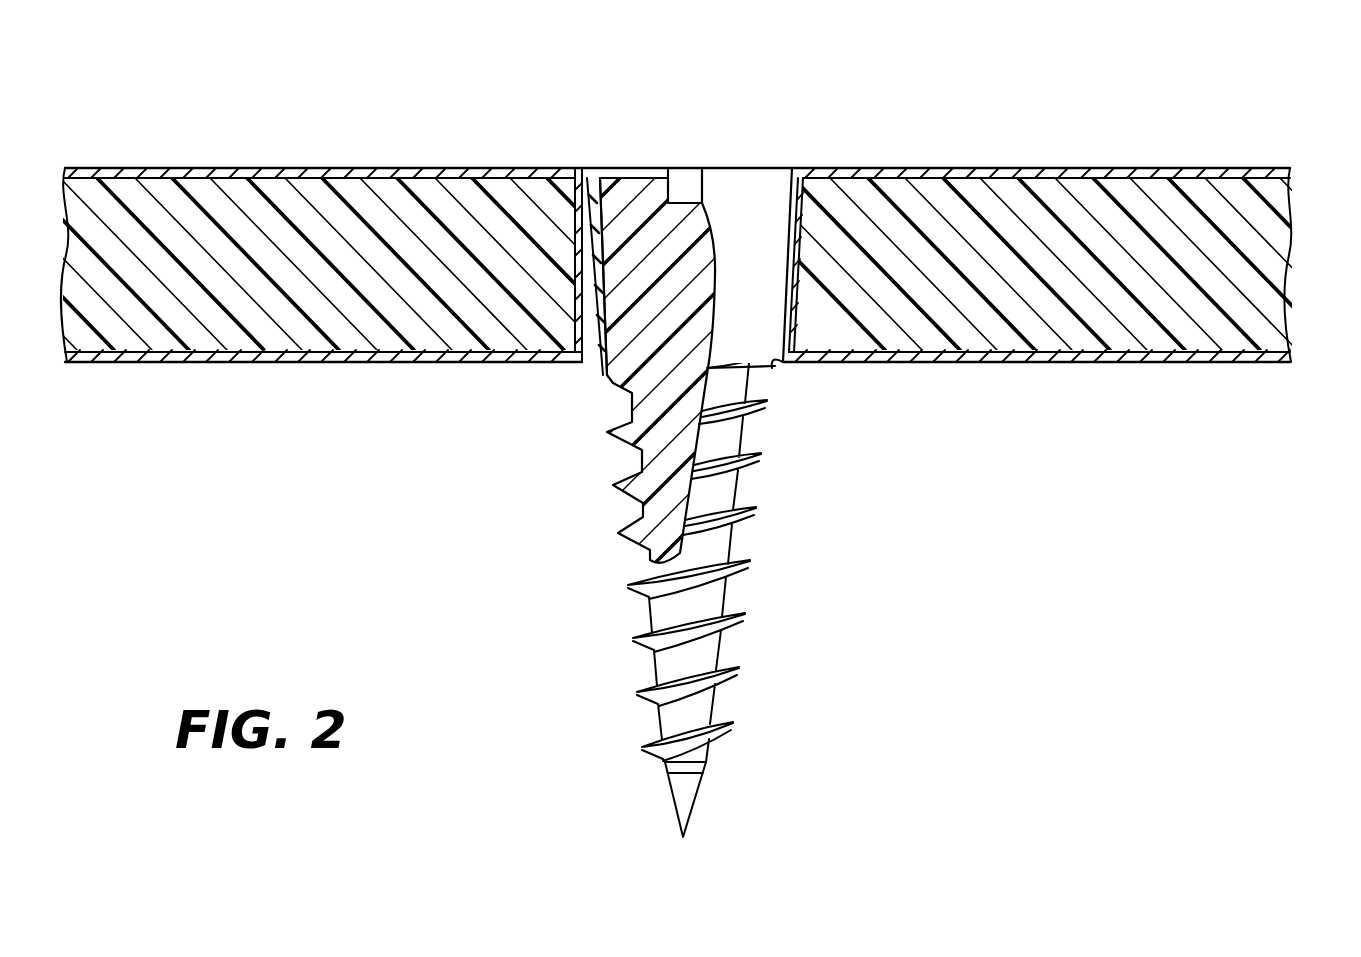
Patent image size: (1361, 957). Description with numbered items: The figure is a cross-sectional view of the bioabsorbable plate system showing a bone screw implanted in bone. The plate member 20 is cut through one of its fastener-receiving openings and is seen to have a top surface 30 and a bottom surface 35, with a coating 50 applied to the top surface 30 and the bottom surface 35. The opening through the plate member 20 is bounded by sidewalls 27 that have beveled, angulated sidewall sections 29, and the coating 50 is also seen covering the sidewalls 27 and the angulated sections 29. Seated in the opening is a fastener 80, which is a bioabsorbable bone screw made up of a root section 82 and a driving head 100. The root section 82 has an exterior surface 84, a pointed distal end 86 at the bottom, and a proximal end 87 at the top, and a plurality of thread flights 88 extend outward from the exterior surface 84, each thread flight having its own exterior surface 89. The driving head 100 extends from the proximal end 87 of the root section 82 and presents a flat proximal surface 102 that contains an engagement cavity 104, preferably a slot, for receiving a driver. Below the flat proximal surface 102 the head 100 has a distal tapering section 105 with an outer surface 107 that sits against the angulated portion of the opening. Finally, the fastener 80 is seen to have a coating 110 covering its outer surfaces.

The plate member 20 is at (202, 186).
The coating 50 is at (302, 172).
The top surface 30 is at (1180, 168).
The bottom surface 35 is at (1130, 348).
The fastener 80 is at (638, 453).
The root section 82 is at (740, 490).
The exterior surface 84 is at (602, 372).
The pointed distal end 86 is at (683, 840).
The proximal end 87 is at (800, 175).
The thread flights 88 is at (633, 637).
The exterior surface 89 is at (645, 643).
The driving head 100 is at (630, 172).
The flat proximal surface 102 is at (733, 172).
The engagement cavity 104 is at (686, 172).
The distal tapering section 105 is at (608, 225).
The outer surface 107 is at (780, 173).
The coating 110 is at (650, 172).
The sidewalls 27 is at (774, 370).
The angulated sidewall sections 29 is at (842, 356).